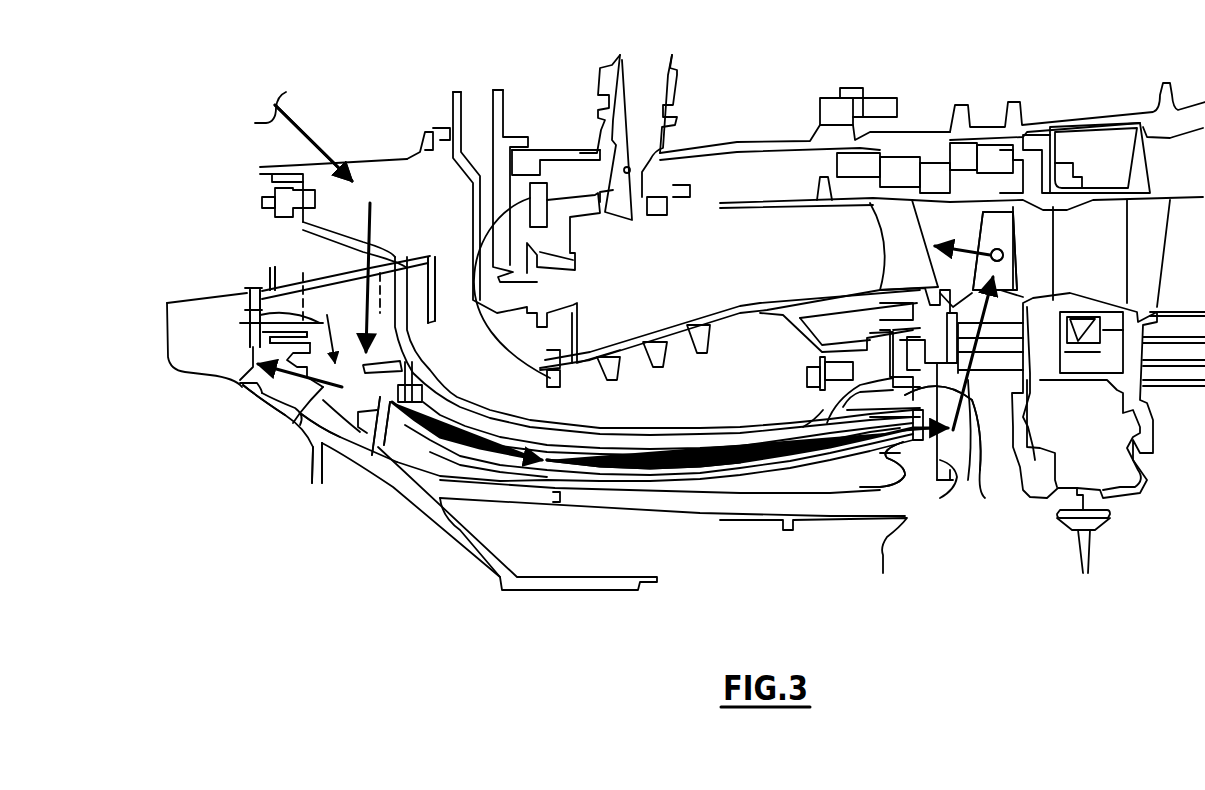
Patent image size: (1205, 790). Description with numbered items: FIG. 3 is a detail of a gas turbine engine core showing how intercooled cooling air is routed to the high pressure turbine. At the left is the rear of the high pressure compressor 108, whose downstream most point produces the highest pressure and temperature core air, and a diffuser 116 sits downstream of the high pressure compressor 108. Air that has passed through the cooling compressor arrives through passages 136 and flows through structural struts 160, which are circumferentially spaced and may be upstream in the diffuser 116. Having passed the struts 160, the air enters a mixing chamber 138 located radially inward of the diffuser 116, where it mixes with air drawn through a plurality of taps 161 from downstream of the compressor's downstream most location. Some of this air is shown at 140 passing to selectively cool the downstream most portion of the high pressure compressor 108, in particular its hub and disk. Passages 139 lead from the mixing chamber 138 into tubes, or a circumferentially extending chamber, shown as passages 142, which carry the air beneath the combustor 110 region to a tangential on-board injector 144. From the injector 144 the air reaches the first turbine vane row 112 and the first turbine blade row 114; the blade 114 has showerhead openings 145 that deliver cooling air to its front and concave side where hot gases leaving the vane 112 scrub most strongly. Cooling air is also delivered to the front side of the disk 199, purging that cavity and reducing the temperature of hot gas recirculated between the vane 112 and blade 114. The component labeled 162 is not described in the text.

The high pressure compressor 108 is at (272, 278).
The combustor 110 is at (662, 287).
The first turbine vane row 112 is at (905, 251).
The first turbine blade row 114 is at (1000, 270).
The diffuser 116 is at (415, 277).
The passages 136 is at (306, 118).
The mixing chamber 138 is at (342, 493).
The passages 139 is at (380, 400).
The air passing to cool compressor hub and disk 140 is at (298, 420).
The passages 142 is at (634, 462).
The tangential on-board injector 144 is at (907, 440).
The showerhead openings 145 is at (1003, 253).
The structural struts 160 is at (425, 328).
The taps 161 is at (290, 347).
The impeller shroud 162 is at (258, 322).
The disk 199 is at (237, 383).